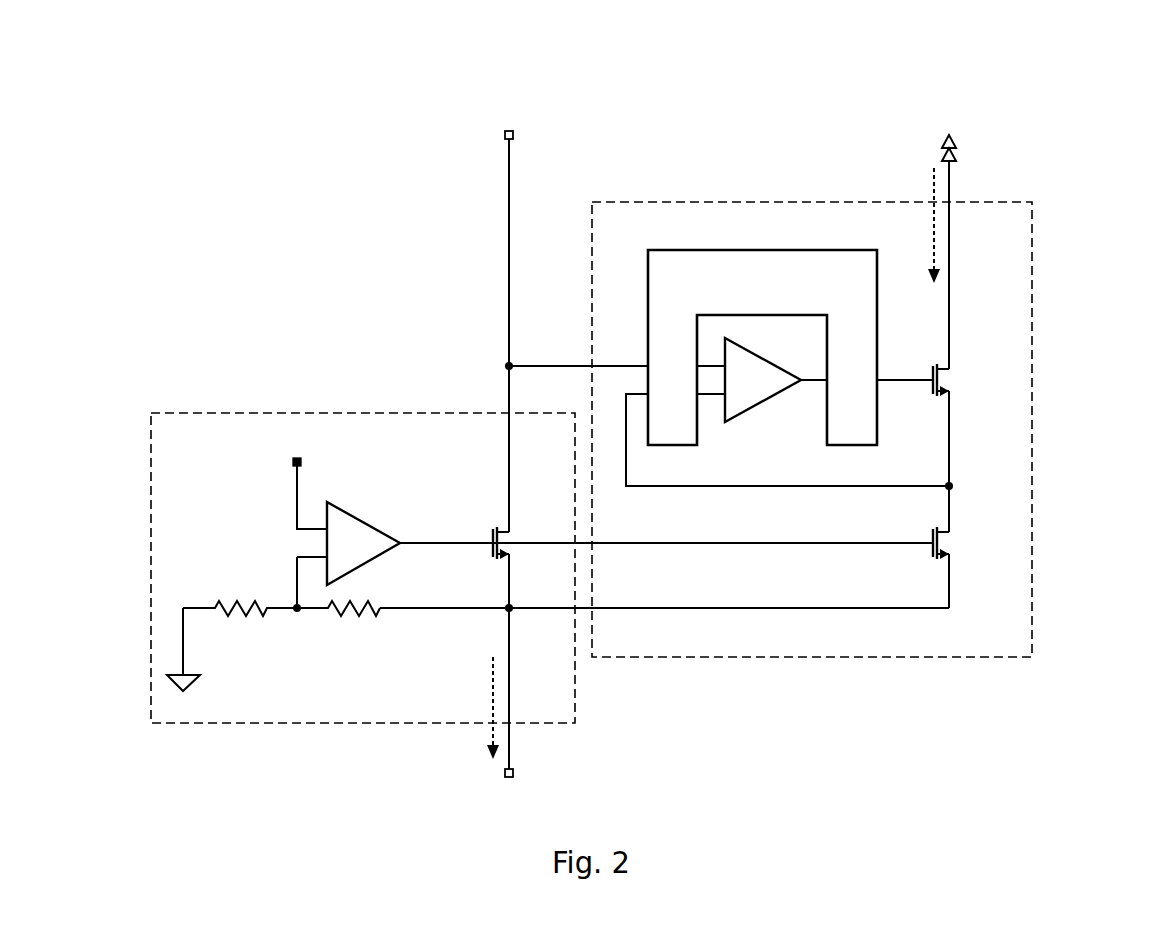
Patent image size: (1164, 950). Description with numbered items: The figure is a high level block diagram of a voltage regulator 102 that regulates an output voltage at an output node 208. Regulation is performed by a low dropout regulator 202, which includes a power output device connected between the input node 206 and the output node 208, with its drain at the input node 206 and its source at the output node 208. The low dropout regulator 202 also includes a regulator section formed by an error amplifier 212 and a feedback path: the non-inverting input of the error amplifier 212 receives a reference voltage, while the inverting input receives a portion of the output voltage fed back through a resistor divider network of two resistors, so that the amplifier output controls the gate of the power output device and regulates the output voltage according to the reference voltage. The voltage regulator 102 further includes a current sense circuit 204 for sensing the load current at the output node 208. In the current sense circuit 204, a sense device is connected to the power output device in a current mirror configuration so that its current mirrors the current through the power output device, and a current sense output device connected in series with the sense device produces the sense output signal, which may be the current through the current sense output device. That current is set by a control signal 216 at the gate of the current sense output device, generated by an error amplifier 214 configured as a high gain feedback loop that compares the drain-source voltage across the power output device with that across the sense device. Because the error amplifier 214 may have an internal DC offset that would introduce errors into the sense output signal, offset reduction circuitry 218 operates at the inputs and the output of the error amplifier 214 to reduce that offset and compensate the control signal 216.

The voltage regulator 102 is at (1062, 85).
The low dropout (LDO) regulator 202 is at (148, 549).
The current sense circuit 204 is at (1032, 634).
The input node 206 is at (501, 139).
The output node 208 is at (516, 774).
The error amplifier 212 is at (372, 524).
The error amplifier 214 is at (743, 413).
The control signal 216 is at (820, 377).
The offset reduction circuitry 218 is at (780, 250).